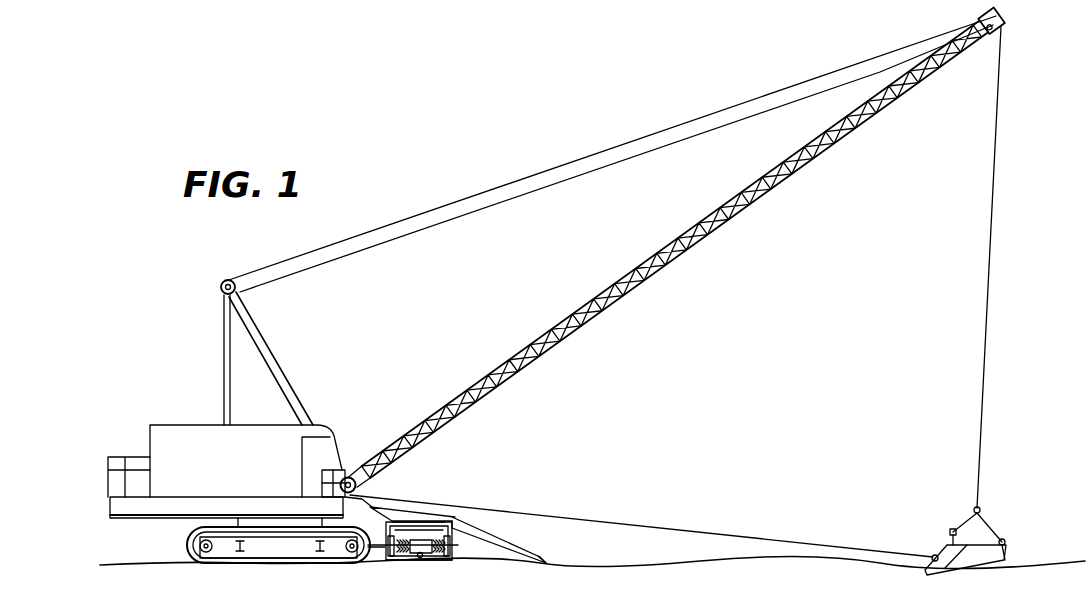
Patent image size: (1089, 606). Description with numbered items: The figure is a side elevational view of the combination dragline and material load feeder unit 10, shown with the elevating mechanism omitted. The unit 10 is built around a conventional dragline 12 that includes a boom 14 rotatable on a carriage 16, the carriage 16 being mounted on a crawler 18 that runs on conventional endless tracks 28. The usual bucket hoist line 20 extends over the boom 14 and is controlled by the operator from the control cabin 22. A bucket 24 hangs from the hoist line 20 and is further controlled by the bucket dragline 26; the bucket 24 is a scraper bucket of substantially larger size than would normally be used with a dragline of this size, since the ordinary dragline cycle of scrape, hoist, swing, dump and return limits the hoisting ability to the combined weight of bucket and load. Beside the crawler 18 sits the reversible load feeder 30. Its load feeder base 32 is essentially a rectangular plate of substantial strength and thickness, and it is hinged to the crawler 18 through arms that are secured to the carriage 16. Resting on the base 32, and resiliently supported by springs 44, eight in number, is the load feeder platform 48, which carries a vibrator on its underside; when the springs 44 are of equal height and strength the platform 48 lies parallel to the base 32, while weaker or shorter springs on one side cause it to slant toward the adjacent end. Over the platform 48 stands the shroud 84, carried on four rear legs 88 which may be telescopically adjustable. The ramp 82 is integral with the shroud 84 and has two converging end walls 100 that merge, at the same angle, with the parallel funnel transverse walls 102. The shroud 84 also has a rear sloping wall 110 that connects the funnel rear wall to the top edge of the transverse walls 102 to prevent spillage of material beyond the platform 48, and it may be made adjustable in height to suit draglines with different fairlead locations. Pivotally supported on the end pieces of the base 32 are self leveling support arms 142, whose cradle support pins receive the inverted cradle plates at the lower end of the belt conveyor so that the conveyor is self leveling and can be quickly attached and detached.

The combination dragline and material load feeder unit 10 is at (464, 465).
The dragline 12 is at (297, 393).
The boom 14 is at (702, 210).
The carriage 16 is at (260, 523).
The crawler 18 is at (295, 547).
The bucket hoist line 20 is at (672, 125).
The control cabin 22 is at (322, 462).
The bucket 24 is at (990, 555).
The bucket dragline 26 is at (682, 532).
The endless tracks 28 is at (247, 563).
The reversible load feeder 30 is at (375, 563).
The load feeder base 32 is at (427, 566).
The springs 44 is at (445, 548).
The load feeder platform 48 is at (418, 537).
The ramp 82 is at (537, 558).
The shroud 84 is at (455, 518).
The rear legs 88 is at (388, 570).
The converging end walls 100 is at (493, 533).
The funnel transverse walls 102 is at (407, 487).
The rear sloping wall 110 is at (345, 506).
The self leveling support arms 142 is at (412, 557).